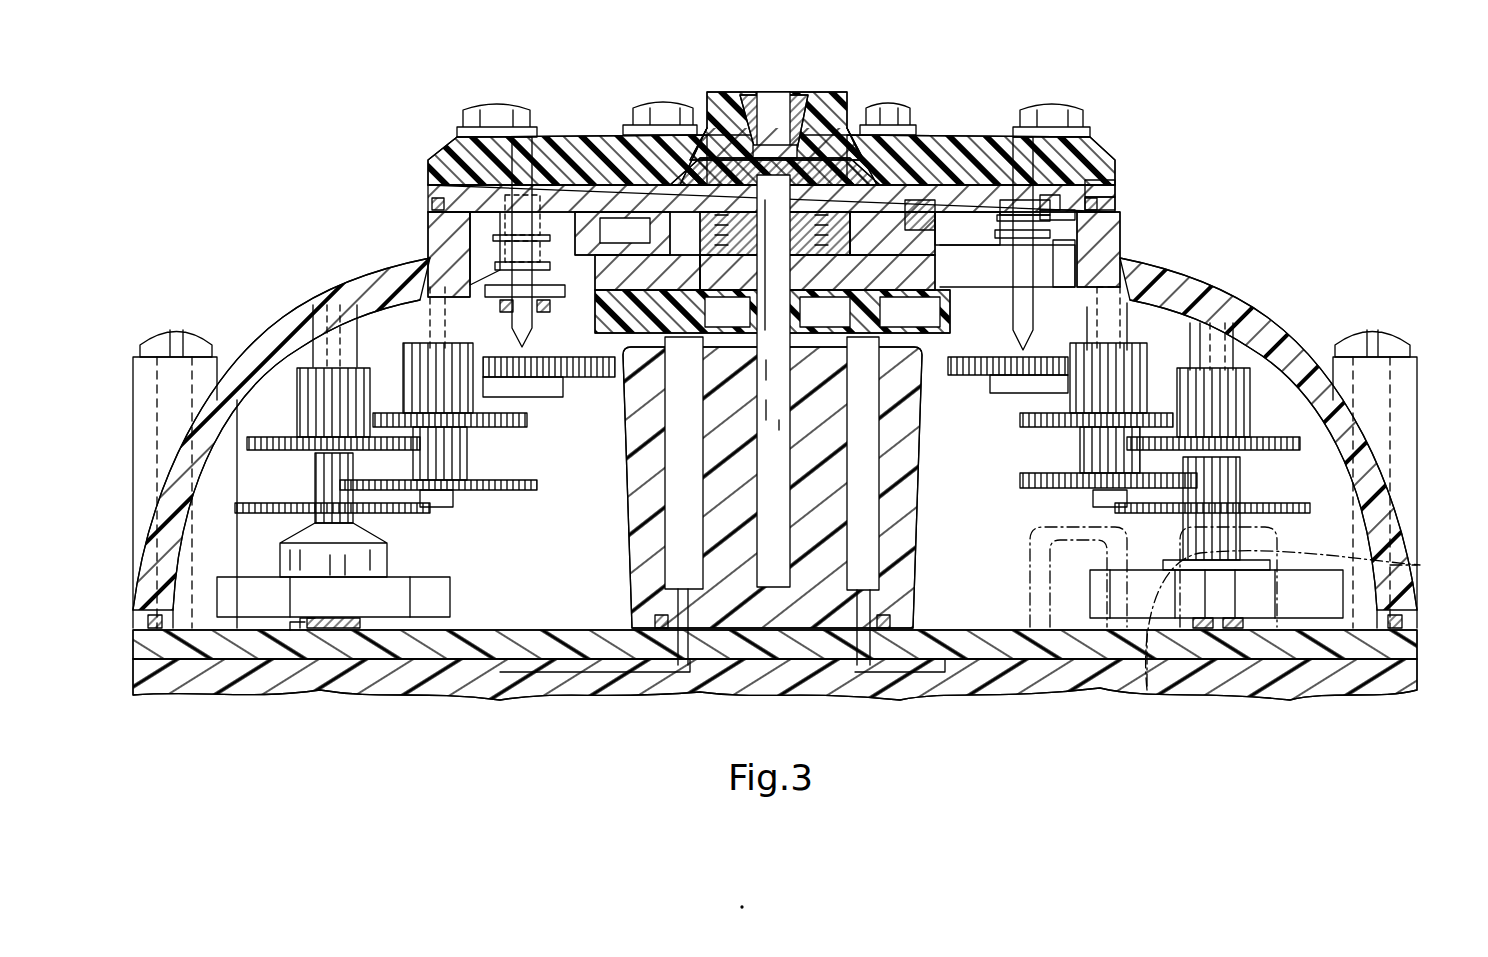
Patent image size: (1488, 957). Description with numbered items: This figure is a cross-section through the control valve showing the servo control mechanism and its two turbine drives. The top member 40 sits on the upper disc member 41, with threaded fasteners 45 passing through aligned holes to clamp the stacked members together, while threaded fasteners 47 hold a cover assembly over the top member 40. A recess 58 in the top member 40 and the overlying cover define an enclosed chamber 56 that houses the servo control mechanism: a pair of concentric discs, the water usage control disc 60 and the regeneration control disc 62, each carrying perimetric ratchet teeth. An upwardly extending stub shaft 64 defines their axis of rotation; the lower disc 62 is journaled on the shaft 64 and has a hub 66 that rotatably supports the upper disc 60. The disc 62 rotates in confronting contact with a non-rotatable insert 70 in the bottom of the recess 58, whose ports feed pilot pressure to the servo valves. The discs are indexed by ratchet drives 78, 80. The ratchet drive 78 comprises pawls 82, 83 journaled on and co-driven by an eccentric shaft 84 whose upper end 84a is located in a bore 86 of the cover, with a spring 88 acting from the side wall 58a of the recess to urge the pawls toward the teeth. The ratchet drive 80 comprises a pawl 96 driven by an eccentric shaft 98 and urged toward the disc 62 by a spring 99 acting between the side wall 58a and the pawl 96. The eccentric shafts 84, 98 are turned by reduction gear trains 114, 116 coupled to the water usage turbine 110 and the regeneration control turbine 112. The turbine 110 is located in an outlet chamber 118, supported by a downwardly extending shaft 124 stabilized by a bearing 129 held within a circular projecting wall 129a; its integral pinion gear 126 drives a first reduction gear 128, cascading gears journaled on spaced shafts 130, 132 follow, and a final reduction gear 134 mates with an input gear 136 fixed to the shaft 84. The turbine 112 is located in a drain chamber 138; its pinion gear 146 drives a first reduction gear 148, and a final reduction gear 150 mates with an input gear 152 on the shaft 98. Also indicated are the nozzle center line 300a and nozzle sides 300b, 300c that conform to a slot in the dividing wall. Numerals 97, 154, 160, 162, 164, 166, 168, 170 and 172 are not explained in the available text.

The top member 40 is at (1264, 345).
The upper disc member 41 is at (1410, 648).
The threaded fasteners 45 is at (1380, 340).
The threaded fasteners 47 is at (500, 118).
The enclosed chamber 56 is at (605, 226).
The recess 58 is at (1100, 275).
The side wall 58a is at (1060, 240).
The water usage control disc 60 is at (945, 200).
The regeneration control disc 62 is at (905, 275).
The stub shaft 64 is at (788, 400).
The hub 66 is at (895, 250).
The non-rotatable insert 70 is at (748, 320).
The ratchet drive 78 is at (1065, 212).
The ratchet drive 80 is at (470, 278).
The pawl 82 is at (1095, 195).
The pawl 83 is at (1040, 280).
The eccentric shaft 84 is at (1120, 322).
The upper end of eccentric shaft 84a is at (1105, 185).
The bore 86 is at (1008, 140).
The spring 88 is at (1040, 165).
The pawl 96 is at (521, 252).
The cover body 97 is at (500, 205).
The eccentric shaft 98 is at (535, 326).
The spring 99 is at (520, 240).
The water usage turbine 110 is at (1322, 610).
The regeneration control turbine 112 is at (255, 618).
The reduction gear train 114 is at (1042, 505).
The reduction gear train 116 is at (482, 500).
The outlet chamber 118 is at (1340, 472).
The shaft 124 is at (330, 630).
The pinion gear 126 is at (1225, 495).
The first reduction gear 128 is at (1300, 508).
The bearing 129 is at (315, 630).
The circular projecting wall 129a is at (292, 632).
The shaft 130 is at (332, 315).
The shaft 132 is at (438, 290).
The final reduction gear 134 is at (1025, 468).
The input gear 136 is at (962, 375).
The drain chamber 138 is at (615, 563).
The pinion gear 146 is at (315, 488).
The first reduction gear 148 is at (400, 512).
The final reduction gear 150 is at (625, 210).
The input gear 152 is at (595, 410).
The spacer 154 is at (950, 238).
The cap 160 is at (805, 105).
The cap flange 162 is at (725, 108).
The funnel 164 is at (762, 100).
The bearing 166 is at (845, 170).
The seal 168 is at (868, 185).
The opening 170 is at (778, 92).
The spring 172 is at (775, 267).
The center line 300a is at (1127, 688).
The nozzle side 300b is at (1410, 566).
The nozzle side 300c is at (1283, 548).